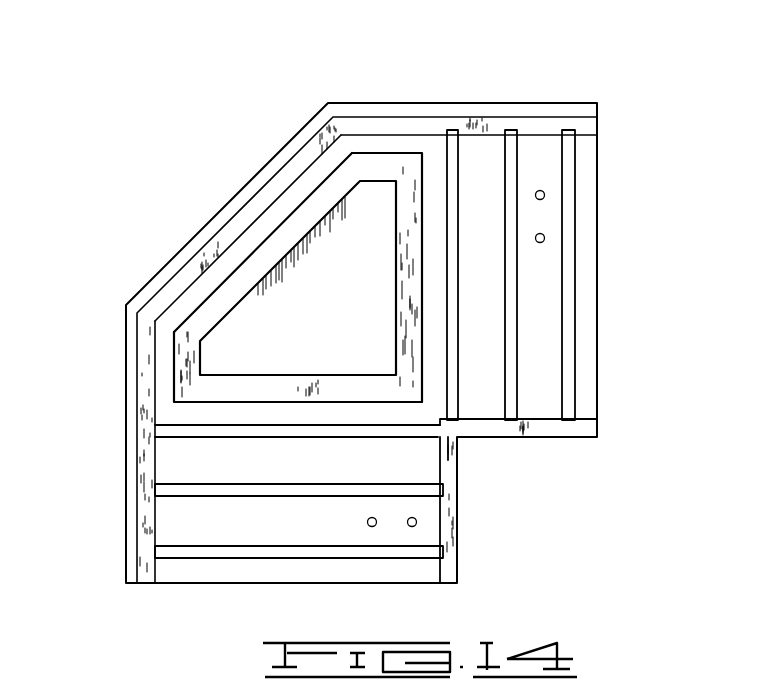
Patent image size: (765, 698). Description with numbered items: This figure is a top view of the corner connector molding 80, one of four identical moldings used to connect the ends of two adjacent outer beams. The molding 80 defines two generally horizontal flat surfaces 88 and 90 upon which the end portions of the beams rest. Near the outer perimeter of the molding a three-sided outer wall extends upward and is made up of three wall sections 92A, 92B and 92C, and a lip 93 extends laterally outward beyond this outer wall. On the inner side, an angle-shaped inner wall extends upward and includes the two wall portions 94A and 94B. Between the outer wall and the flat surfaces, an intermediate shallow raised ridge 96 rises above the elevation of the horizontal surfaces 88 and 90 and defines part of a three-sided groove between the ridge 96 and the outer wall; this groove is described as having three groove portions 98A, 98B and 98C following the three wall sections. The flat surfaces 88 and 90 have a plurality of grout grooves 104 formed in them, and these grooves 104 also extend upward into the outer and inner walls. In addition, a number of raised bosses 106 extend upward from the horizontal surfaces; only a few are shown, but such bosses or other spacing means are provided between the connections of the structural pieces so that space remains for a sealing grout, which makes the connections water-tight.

The corner connector molding 80 is at (580, 86).
The horizontal flat surface 88 is at (402, 470).
The horizontal flat surface 90 is at (547, 311).
The wall section 92A is at (145, 466).
The wall section 92B is at (223, 242).
The wall section 92C is at (410, 122).
The lip 93 is at (132, 402).
The wall portion 94A is at (447, 528).
The wall portion 94B is at (548, 428).
The raised ridge 96 is at (205, 320).
The groove portion 98A is at (165, 360).
The groove portion 98B is at (282, 208).
The groove portion 98C is at (375, 143).
The grout grooves 104 is at (567, 395).
The raised bosses 106 is at (545, 237).